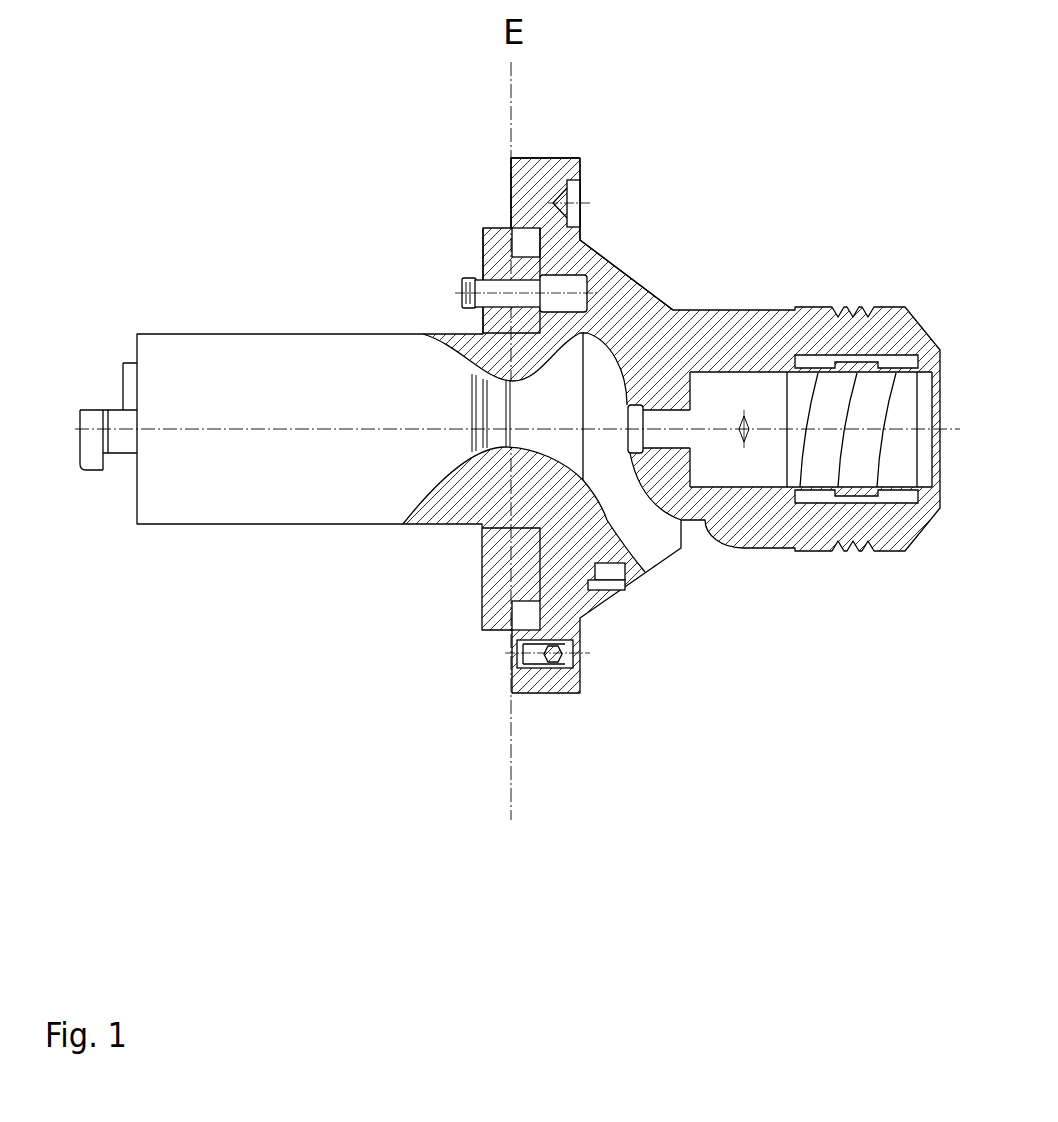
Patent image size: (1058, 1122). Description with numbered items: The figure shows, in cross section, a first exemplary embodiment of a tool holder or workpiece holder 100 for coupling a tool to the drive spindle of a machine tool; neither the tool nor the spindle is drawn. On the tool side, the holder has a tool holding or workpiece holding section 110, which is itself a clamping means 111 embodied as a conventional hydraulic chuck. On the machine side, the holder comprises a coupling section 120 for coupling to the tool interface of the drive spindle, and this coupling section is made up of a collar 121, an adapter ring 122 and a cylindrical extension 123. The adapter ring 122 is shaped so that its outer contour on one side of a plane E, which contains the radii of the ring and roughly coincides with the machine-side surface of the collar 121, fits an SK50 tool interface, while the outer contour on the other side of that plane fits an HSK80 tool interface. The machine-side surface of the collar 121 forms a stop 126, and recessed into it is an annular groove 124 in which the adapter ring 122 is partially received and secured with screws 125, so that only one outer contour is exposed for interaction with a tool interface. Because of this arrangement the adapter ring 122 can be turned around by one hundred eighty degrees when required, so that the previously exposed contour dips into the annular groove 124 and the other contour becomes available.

The tool holder or workpiece holder 100 is at (775, 225).
The tool holding or workpiece holding section 110 is at (937, 567).
The clamping means 111 is at (850, 362).
The coupling section 120 is at (670, 717).
The collar 121 is at (525, 685).
The adapter ring 122 is at (582, 221).
The cylindrical extension 123 is at (477, 252).
The annular groove 124 is at (551, 172).
The screws 125 is at (462, 290).
The stop 126 is at (512, 190).